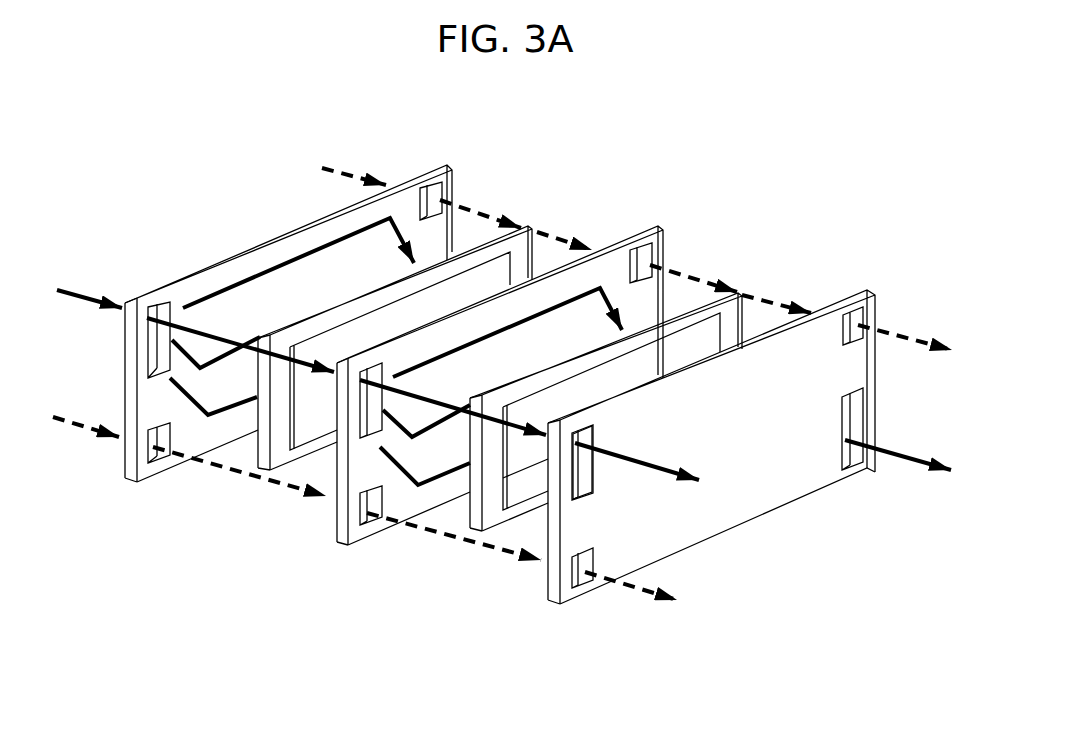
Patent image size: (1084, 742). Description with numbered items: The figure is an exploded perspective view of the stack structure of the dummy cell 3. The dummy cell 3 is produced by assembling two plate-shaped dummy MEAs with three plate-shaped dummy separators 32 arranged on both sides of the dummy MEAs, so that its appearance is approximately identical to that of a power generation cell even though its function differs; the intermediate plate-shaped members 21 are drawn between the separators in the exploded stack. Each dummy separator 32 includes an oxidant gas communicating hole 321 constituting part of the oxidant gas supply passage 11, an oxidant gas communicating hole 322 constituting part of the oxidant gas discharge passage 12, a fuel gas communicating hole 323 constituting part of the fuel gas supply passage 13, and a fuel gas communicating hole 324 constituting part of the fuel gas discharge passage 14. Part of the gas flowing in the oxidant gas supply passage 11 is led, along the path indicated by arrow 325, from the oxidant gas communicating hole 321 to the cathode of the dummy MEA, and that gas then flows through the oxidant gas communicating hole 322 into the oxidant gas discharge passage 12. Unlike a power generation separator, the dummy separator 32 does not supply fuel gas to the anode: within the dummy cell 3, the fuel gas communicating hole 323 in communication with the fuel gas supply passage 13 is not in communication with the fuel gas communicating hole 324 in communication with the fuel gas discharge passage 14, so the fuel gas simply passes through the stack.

The dummy cell 3 is at (654, 160).
The dummy separator 32 is at (448, 164).
The frame 21 is at (525, 228).
The arrow 325 is at (285, 262).
The oxidant gas supply passage 11 is at (663, 478).
The oxidant gas discharge passage 12 is at (900, 458).
The fuel gas supply passage 13 is at (893, 335).
The fuel gas discharge passage 14 is at (643, 590).
The oxidant gas communicating hole 321 is at (587, 470).
The oxidant gas communicating hole 322 is at (856, 458).
The fuel gas communicating hole 323 is at (860, 345).
The fuel gas communicating hole 324 is at (587, 567).